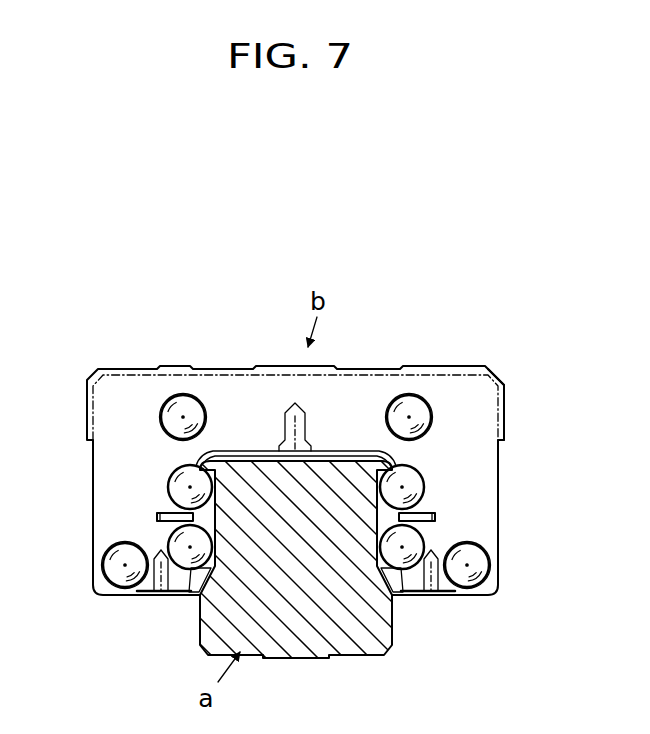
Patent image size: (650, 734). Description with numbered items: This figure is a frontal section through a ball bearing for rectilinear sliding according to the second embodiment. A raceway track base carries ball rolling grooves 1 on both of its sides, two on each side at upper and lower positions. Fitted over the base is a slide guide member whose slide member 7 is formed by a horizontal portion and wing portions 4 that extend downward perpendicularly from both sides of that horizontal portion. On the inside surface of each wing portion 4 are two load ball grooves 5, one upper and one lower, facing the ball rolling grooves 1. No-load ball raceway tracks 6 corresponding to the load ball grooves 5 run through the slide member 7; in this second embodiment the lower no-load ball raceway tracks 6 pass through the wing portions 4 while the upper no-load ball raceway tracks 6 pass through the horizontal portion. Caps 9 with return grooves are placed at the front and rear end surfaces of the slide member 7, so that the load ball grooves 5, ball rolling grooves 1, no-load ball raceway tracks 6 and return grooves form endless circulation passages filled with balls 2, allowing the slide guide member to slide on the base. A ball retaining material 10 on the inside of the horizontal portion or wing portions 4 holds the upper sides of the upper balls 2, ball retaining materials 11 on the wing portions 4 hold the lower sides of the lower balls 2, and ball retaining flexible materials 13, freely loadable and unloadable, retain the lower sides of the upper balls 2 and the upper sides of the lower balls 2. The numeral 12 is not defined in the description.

The ball rolling groove 1 is at (193, 490).
The ball 2 is at (187, 403).
The wing portion 4 is at (92, 458).
The load ball groove 5 is at (408, 570).
The no-load ball raceway track 6 is at (403, 397).
The slide member 7 is at (486, 358).
The cap 9 is at (505, 402).
The ball retaining material 10 is at (250, 452).
The ball retaining material 11 is at (403, 582).
The ball retainer 12 is at (157, 520).
The ball retaining flexible material 13 is at (157, 515).